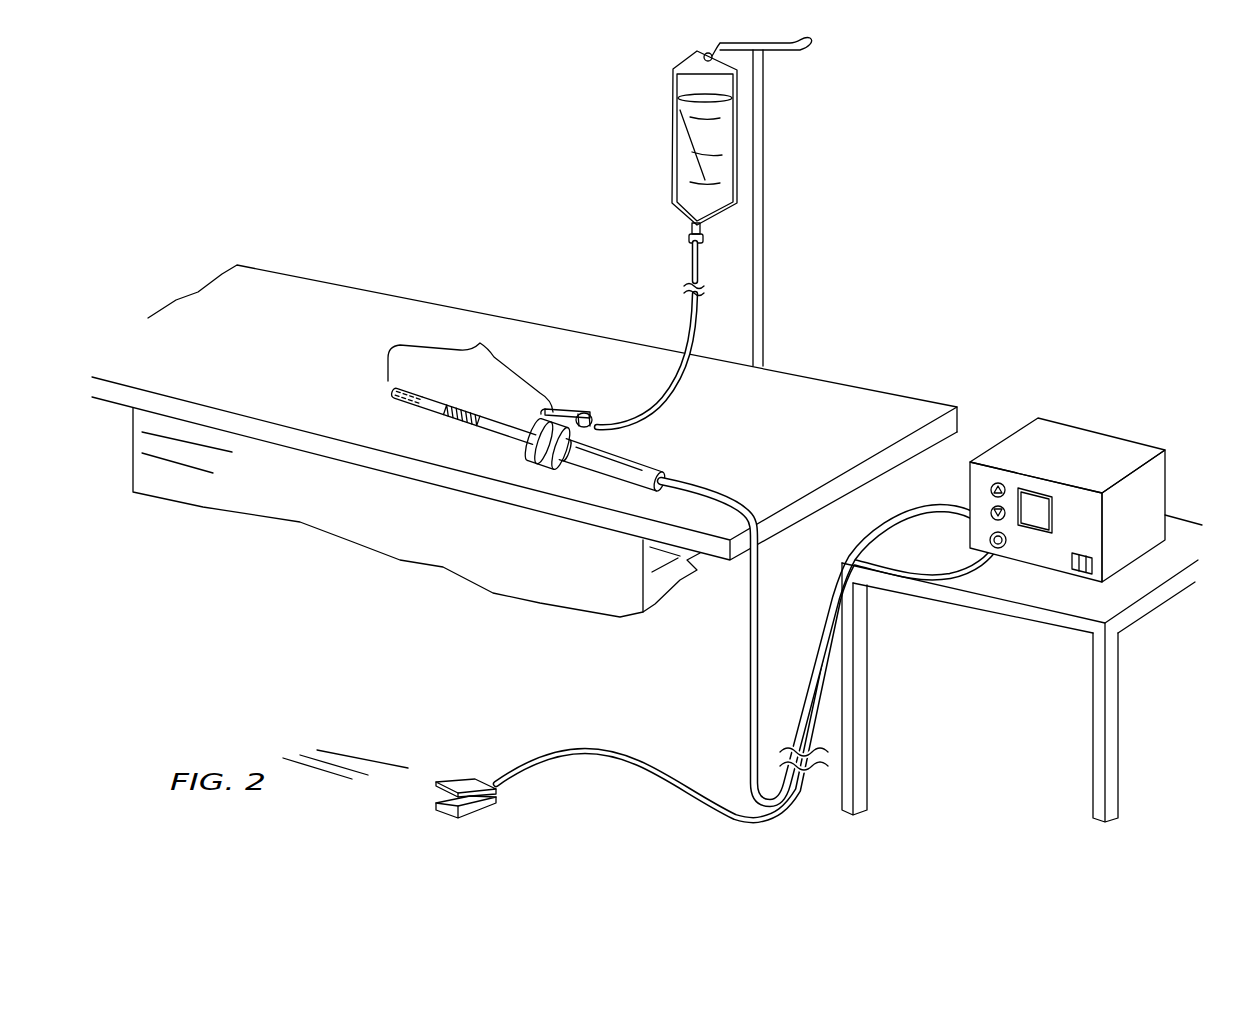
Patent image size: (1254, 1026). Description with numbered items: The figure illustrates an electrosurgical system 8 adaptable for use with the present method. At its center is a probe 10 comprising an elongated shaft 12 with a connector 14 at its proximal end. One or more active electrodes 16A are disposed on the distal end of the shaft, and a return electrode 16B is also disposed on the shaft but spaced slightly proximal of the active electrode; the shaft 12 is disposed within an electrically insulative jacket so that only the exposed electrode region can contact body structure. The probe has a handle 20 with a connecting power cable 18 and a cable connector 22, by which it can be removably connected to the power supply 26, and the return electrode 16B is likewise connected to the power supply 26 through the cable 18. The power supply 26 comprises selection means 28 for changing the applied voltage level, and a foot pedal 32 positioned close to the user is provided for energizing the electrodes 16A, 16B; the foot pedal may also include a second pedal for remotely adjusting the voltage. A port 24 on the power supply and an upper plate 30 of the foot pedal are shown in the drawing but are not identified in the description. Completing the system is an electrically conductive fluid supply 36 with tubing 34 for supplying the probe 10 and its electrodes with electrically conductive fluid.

The electrosurgical system 8 is at (352, 242).
The probe 10 is at (489, 422).
The elongated shaft 12 is at (424, 418).
The connector 14 is at (533, 458).
The active electrode 16A is at (388, 397).
The return electrode 16B is at (457, 420).
The power cable 18 is at (760, 632).
The handle 20 is at (586, 468).
The cable connector 22 is at (600, 430).
The connector port 24 is at (997, 550).
The power supply 26 is at (1037, 459).
The selection means 28 is at (990, 509).
The foot pedal 30 is at (460, 782).
The foot pedal 32 is at (451, 780).
The tubing 34 is at (684, 290).
The electrically conductive fluid supply 36 is at (685, 178).